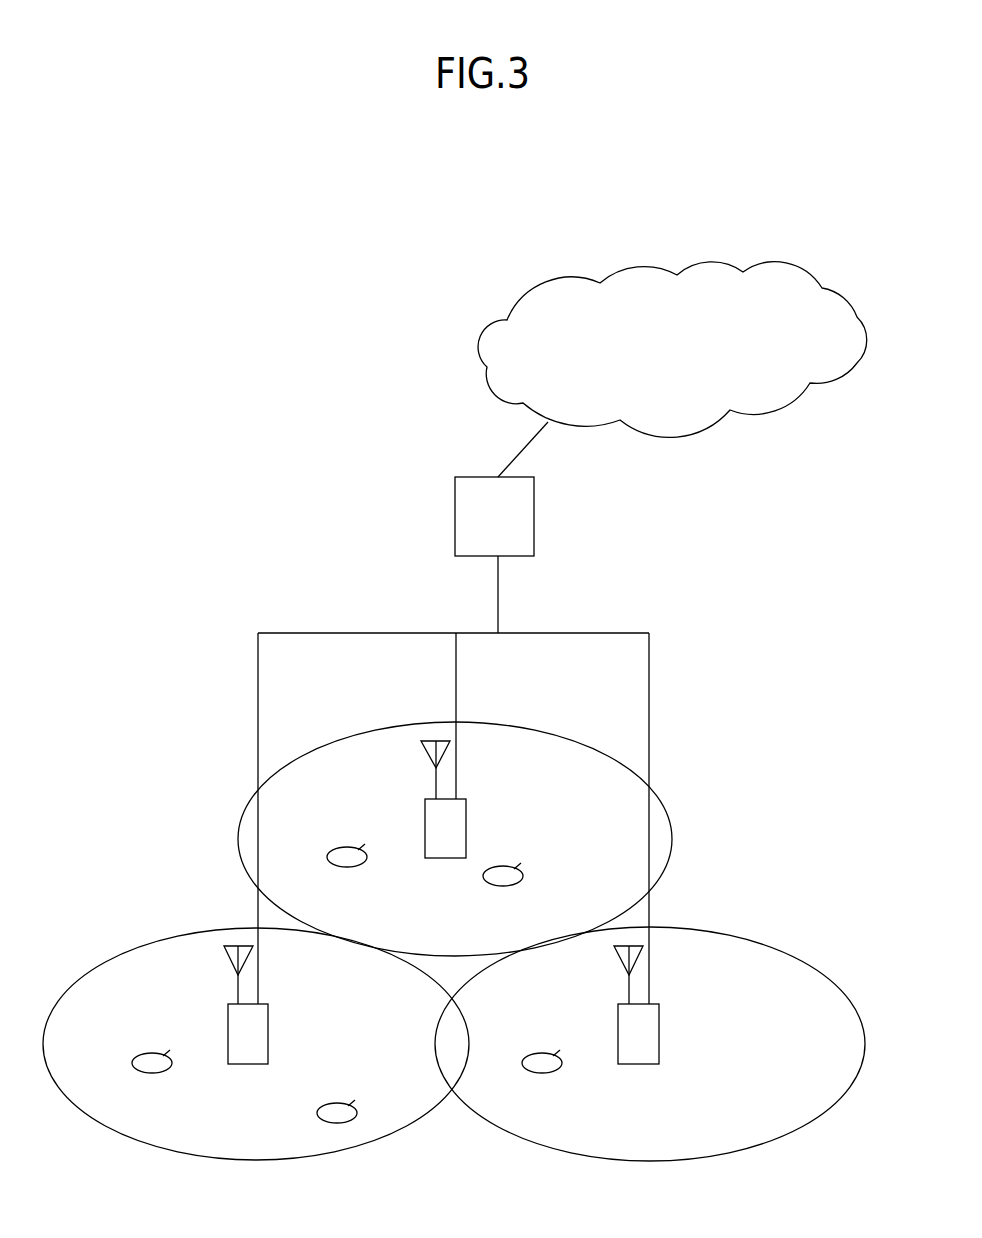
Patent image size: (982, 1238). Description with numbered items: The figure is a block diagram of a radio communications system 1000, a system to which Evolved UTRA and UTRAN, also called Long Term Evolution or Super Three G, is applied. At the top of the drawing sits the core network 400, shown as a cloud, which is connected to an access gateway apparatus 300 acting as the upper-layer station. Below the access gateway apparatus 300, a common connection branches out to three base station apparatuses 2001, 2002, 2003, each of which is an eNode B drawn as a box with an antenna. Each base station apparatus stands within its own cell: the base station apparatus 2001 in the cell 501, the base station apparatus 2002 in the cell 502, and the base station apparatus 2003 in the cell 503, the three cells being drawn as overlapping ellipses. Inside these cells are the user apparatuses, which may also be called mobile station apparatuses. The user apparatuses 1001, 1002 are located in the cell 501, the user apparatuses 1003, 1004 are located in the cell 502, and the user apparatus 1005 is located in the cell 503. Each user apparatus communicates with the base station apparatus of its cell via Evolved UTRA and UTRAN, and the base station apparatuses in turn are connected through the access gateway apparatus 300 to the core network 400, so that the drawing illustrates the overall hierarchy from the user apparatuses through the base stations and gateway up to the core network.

The radio communications system 1000 is at (104, 307).
The core network 400 is at (717, 262).
The access gateway apparatus 300 is at (534, 512).
The cell 501 is at (335, 1155).
The cell 502 is at (531, 726).
The cell 503 is at (725, 1155).
The base station apparatus 2001 is at (268, 1031).
The base station apparatus 2002 is at (466, 825).
The base station apparatus 2003 is at (659, 1031).
The user apparatus 1001 is at (157, 1073).
The user apparatus 1002 is at (352, 1102).
The user apparatus 1003 is at (352, 867).
The user apparatus 1004 is at (508, 886).
The user apparatus 1005 is at (547, 1073).